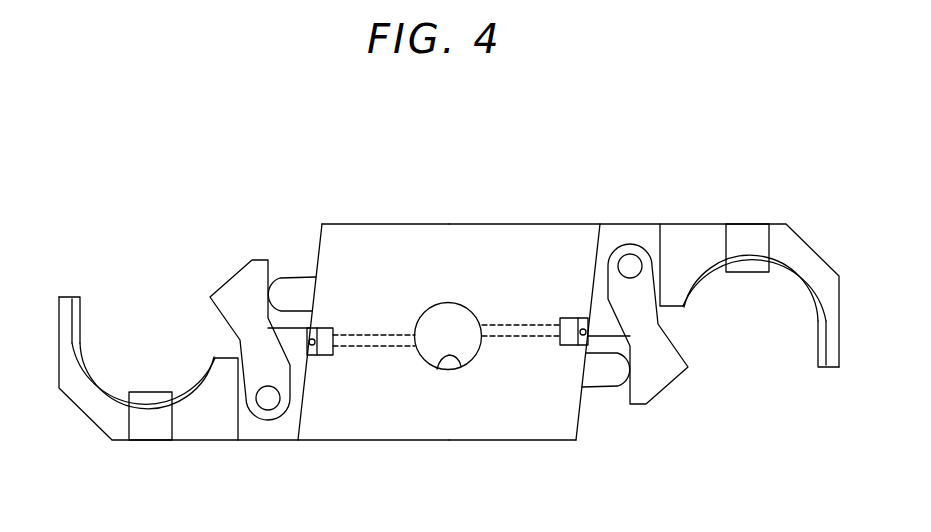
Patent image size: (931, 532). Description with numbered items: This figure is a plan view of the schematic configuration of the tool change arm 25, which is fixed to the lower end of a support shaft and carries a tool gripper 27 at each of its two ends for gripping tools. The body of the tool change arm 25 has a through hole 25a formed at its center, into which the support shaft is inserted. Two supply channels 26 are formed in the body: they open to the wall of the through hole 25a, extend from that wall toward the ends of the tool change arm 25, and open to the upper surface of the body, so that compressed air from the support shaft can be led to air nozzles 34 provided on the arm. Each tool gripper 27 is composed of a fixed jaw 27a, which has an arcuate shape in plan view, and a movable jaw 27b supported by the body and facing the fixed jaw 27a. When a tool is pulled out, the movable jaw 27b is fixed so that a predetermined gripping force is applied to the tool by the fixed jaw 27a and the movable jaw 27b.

The tool change arm 25 is at (89, 179).
The through hole 25a is at (440, 366).
The supply channels 26 is at (400, 335).
The tool grippers 27 is at (160, 314).
The fixed jaw 27a is at (68, 304).
The movable jaw 27b is at (246, 271).
The air nozzles 34 is at (570, 320).